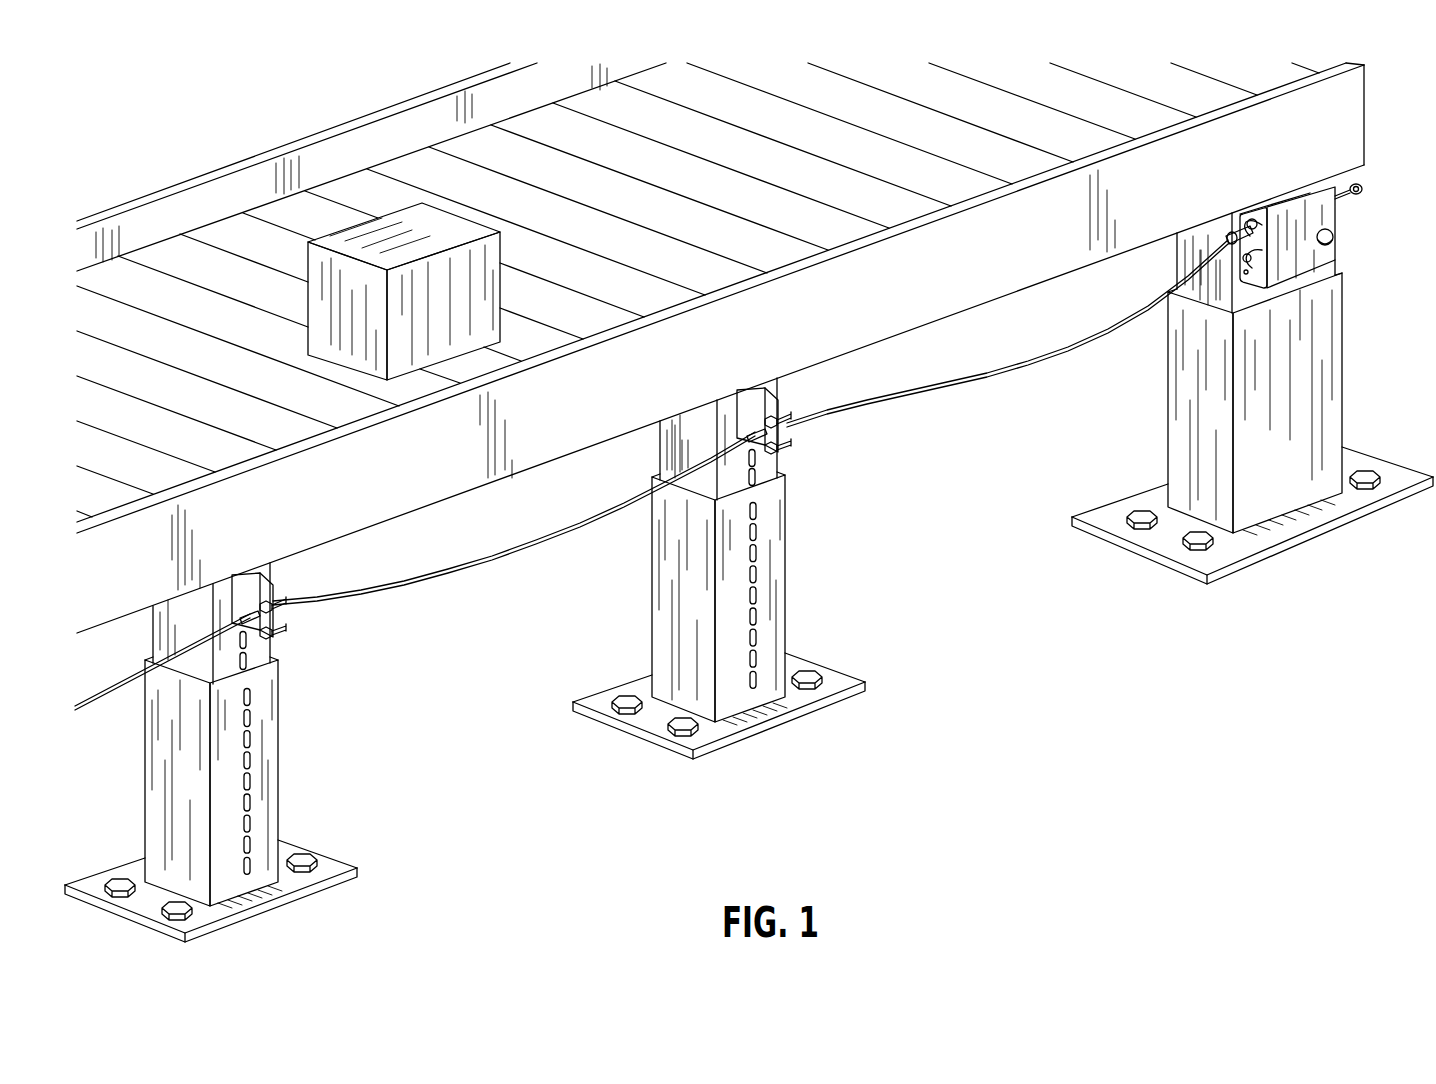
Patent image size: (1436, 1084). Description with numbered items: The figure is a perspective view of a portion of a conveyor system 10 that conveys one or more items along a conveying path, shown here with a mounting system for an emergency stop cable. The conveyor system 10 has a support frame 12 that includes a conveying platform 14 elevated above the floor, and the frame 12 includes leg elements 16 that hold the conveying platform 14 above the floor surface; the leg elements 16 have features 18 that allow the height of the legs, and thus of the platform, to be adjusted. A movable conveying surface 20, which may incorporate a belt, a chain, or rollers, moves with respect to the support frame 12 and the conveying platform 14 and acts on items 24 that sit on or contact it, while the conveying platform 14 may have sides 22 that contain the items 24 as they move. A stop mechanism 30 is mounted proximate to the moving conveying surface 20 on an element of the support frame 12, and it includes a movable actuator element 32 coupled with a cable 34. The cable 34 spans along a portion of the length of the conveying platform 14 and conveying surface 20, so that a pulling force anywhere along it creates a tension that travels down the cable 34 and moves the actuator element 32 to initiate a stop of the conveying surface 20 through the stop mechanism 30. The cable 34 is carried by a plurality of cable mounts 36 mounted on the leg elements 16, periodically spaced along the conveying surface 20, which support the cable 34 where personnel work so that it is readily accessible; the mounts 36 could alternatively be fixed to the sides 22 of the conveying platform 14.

The conveyor system 10 is at (410, 893).
The support frame 12 is at (472, 791).
The conveying platform 14 is at (460, 492).
The leg elements 16 is at (278, 697).
The features 18 is at (253, 780).
The movable conveying surface 20 is at (190, 345).
The sides 22 is at (262, 155).
The items 24 is at (462, 217).
The stop mechanism 30 is at (1338, 251).
The movable actuator element 32 is at (1232, 225).
The cable 34 is at (410, 584).
The cable mounts 36 is at (273, 636).